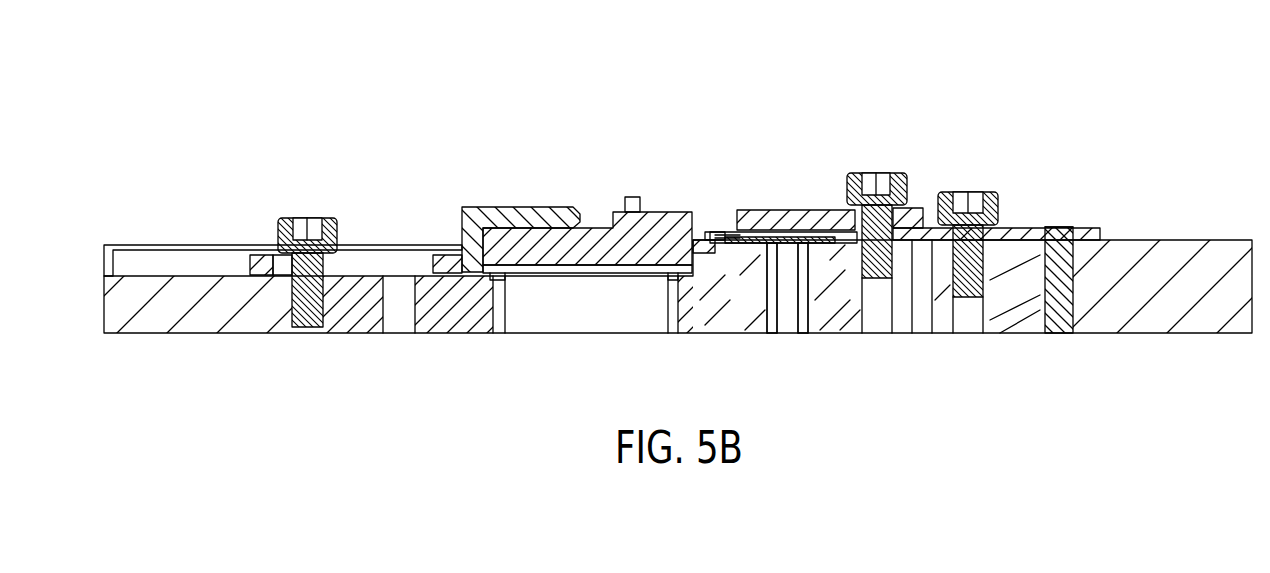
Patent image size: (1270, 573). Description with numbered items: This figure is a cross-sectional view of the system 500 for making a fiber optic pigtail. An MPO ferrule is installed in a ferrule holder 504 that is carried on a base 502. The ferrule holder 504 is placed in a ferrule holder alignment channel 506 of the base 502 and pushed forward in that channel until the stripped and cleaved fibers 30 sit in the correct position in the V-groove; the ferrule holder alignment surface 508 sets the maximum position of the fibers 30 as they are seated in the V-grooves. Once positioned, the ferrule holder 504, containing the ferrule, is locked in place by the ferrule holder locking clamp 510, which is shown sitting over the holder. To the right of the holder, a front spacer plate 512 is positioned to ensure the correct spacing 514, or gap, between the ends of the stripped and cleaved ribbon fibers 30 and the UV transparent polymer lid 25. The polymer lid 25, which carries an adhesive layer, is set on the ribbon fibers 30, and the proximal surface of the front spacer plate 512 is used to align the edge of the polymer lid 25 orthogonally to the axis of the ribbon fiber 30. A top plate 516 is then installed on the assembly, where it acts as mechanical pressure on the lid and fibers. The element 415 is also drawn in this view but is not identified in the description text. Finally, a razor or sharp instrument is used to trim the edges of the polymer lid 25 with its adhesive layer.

The system 500 is at (236, 71).
The base 502 is at (352, 335).
The ferrule holder 504 is at (604, 228).
The ferrule holder alignment channel 506 is at (189, 276).
The ferrule holder alignment surface 508 is at (694, 282).
The ferrule holder locking clamp 510 is at (463, 207).
The front spacer plate 512 is at (1030, 231).
The spacing 514 is at (808, 233).
The top plate 516 is at (778, 221).
The fibers 30 is at (742, 234).
The polymer lid 25 is at (791, 248).
The pin 415 is at (819, 248).